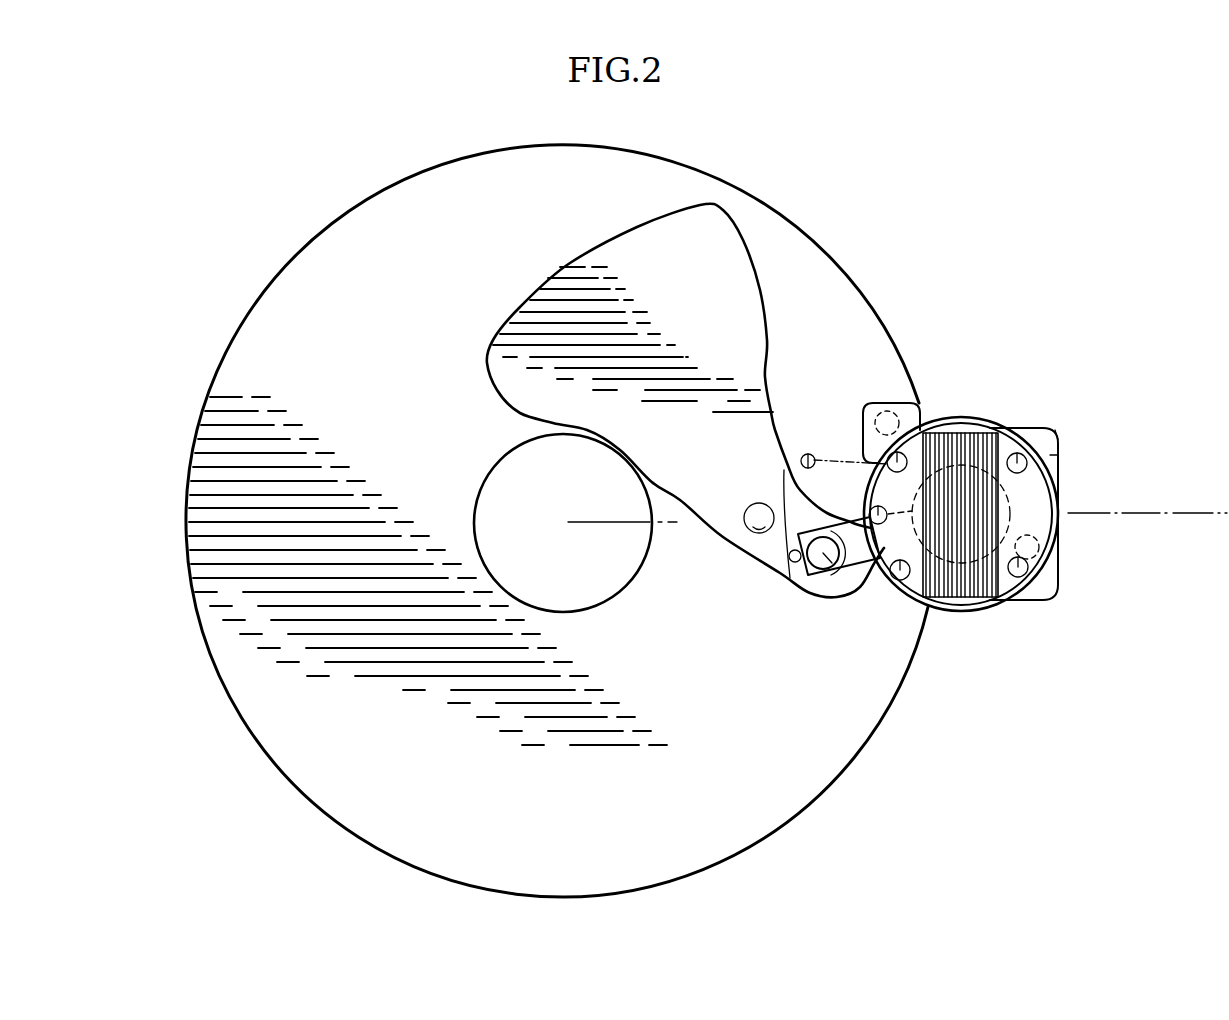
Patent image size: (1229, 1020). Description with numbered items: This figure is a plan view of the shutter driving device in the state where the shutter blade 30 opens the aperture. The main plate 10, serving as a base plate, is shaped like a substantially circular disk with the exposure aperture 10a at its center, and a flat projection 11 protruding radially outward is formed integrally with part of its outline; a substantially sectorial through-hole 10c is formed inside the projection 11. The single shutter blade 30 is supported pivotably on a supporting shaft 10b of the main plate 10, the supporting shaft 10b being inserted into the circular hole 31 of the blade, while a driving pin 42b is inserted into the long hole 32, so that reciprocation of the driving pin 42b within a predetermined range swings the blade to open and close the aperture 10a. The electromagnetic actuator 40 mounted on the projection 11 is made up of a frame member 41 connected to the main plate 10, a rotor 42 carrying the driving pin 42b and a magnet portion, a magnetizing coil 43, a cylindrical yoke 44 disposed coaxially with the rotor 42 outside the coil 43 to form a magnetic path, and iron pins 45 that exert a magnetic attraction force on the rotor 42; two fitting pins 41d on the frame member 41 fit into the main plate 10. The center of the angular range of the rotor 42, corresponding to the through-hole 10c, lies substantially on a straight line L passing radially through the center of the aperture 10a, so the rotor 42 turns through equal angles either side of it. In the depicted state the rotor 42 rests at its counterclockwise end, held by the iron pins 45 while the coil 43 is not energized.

The main plate 10 is at (828, 247).
The exposure aperture 10a is at (486, 497).
The supporting shaft 10b is at (723, 538).
The sectorial through-hole 10c is at (805, 454).
The projection 11 is at (1055, 430).
The shutter blade 30 is at (745, 238).
The circular hole 31 is at (758, 538).
The long hole 32 is at (797, 567).
The electromagnetic actuator 40 is at (966, 412).
The frame member 41 is at (1040, 522).
The fitting pin 41d is at (885, 411).
The rotor 42 is at (1012, 500).
The driving pin 42b is at (836, 573).
The coil 43 is at (1003, 425).
The yoke 44 is at (1052, 455).
The iron pin 45 is at (893, 455).
The straight line L is at (1180, 513).